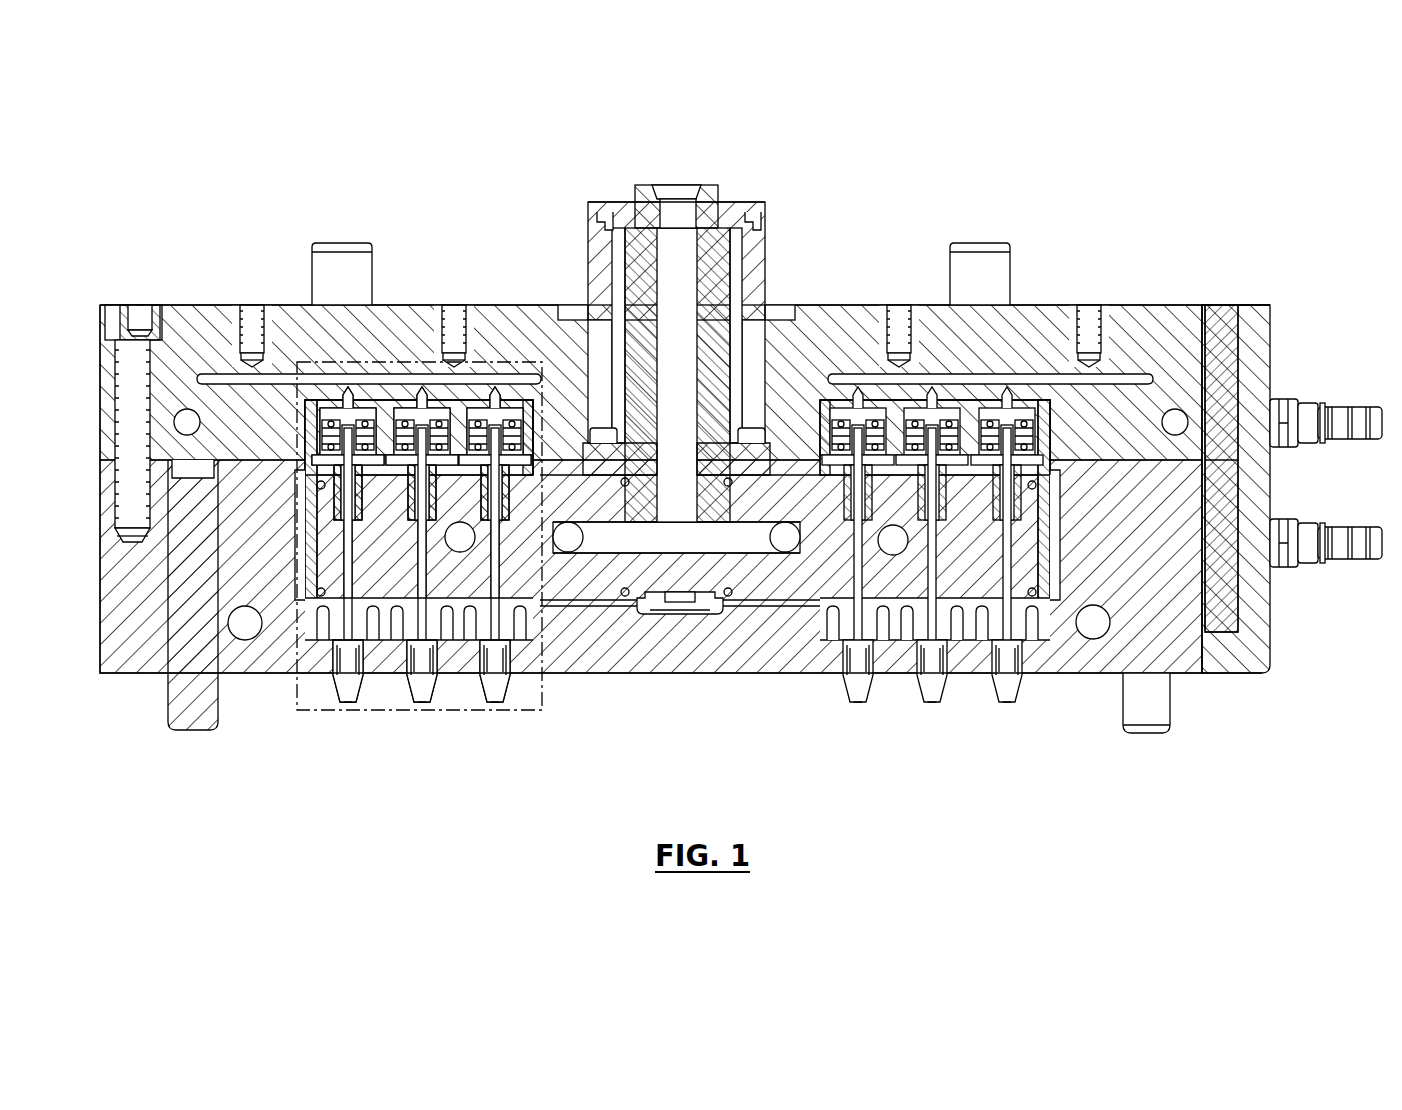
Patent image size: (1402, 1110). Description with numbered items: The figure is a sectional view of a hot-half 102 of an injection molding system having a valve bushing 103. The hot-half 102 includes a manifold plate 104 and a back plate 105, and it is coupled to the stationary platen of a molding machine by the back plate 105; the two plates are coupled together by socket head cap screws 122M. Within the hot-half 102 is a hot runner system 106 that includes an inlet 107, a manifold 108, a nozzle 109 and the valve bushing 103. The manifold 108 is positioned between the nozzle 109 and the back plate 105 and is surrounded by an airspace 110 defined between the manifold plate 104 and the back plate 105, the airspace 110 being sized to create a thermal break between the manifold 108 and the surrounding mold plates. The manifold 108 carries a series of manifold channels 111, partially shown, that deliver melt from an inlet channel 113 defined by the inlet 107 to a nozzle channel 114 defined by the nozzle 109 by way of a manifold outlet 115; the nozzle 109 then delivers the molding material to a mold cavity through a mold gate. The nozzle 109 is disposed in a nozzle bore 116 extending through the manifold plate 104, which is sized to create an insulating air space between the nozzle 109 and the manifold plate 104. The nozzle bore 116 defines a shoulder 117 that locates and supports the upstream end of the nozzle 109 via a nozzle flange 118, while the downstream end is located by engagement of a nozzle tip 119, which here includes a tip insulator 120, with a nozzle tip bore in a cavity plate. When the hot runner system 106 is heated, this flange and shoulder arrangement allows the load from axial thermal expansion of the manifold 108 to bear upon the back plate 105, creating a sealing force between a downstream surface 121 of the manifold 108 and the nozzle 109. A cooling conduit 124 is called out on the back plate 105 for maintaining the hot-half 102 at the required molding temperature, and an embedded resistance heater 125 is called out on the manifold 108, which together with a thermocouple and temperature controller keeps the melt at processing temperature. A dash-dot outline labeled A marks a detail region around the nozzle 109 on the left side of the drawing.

The hot-half 102 is at (1100, 152).
The valve bushing 103 is at (1075, 440).
The manifold plate 104 is at (1263, 635).
The back plate 105 is at (1248, 345).
The hot runner system 106 is at (782, 386).
The inlet 107 is at (688, 362).
The manifold 108 is at (595, 588).
The nozzle 109 is at (332, 656).
The airspace 110 is at (557, 465).
The manifold channels 111 is at (698, 552).
The inlet channel 113 is at (686, 244).
The nozzle channel 114 is at (1024, 652).
The manifold outlet 115 is at (926, 593).
The nozzle bore 116 is at (373, 642).
The shoulder 117 is at (459, 653).
The nozzle flange 118 is at (535, 640).
The nozzle tip 119 is at (868, 657).
The tip insulator 120 is at (985, 695).
The downstream surface 121 is at (735, 610).
The socket head cap screws 122M is at (120, 410).
The cooling conduit 124 is at (187, 413).
The embedded resistance heater 125 is at (311, 466).
The detail region A is at (411, 712).